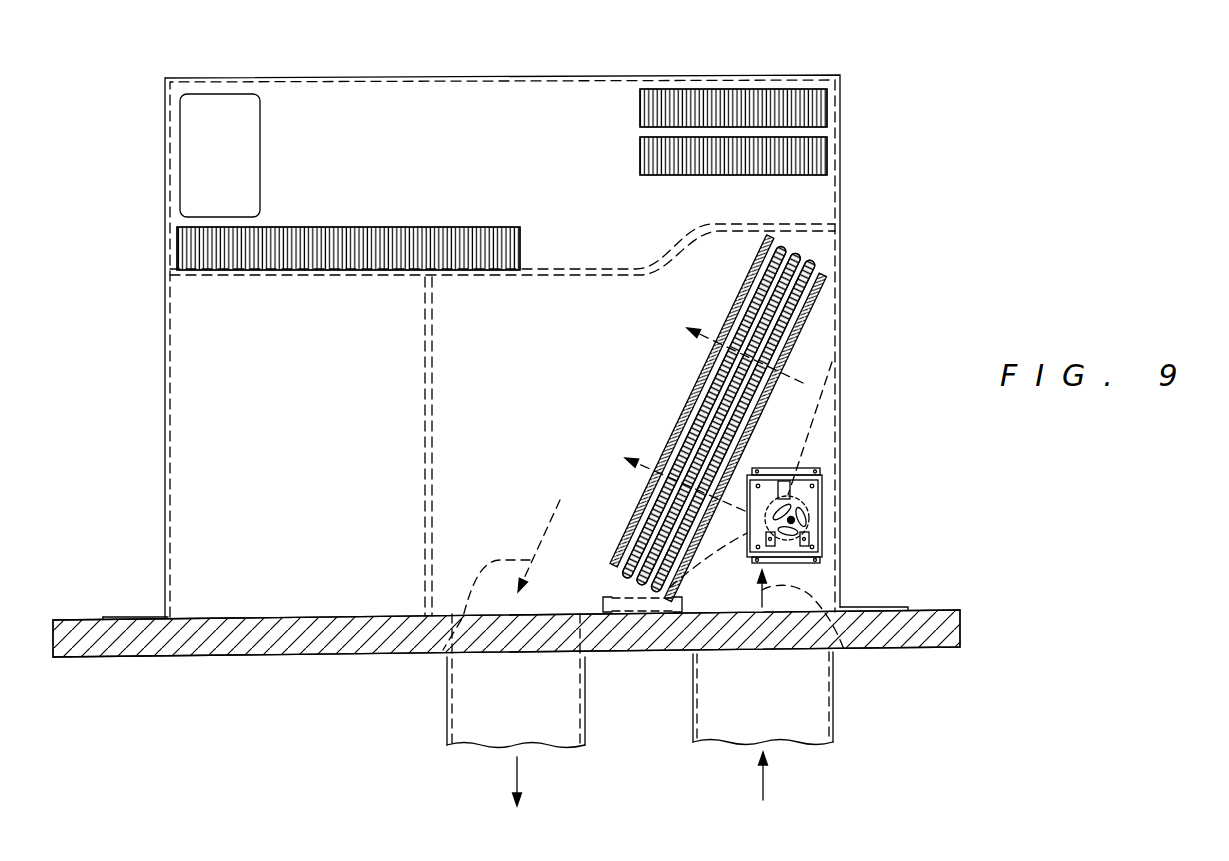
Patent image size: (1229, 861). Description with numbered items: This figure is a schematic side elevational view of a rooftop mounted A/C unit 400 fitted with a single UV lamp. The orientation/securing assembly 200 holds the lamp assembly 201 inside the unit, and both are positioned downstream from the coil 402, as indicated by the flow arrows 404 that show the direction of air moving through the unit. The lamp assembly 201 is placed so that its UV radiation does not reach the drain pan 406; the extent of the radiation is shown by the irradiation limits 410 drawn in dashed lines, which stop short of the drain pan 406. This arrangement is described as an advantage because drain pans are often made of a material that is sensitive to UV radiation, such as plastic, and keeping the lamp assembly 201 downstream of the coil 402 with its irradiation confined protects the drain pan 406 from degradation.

The rooftop mounted A/C unit 400 is at (458, 74).
The coil 402 is at (800, 262).
The flow arrows 404 is at (805, 383).
The irradiation limits 410 is at (813, 427).
The orientation/securing assembly 200 is at (836, 533).
The lamp assembly 201 is at (815, 494).
The drain pan 406 is at (655, 622).